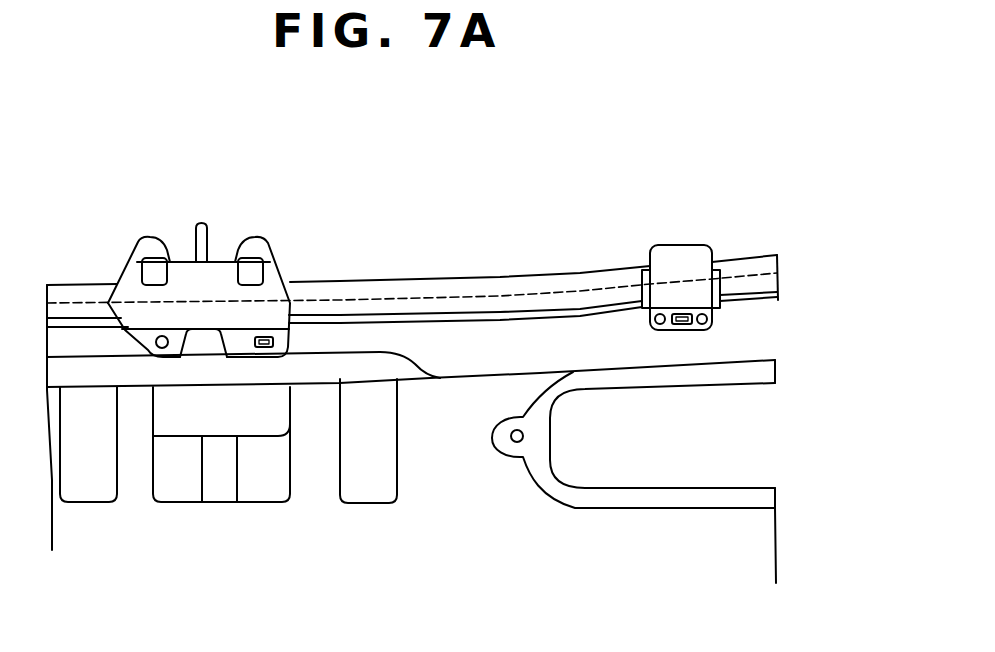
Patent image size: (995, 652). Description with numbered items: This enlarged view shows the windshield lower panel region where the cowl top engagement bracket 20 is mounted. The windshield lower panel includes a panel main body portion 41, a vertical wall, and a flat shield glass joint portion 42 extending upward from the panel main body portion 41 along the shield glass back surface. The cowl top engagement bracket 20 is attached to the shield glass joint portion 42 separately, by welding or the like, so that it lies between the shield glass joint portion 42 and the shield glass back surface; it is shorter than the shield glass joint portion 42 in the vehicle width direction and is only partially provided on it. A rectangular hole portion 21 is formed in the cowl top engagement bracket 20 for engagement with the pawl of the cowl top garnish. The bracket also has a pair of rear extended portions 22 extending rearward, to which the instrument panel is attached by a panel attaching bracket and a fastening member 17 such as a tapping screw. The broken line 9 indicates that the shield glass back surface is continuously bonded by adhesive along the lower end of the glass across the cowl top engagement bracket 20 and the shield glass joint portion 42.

The broken line 9 is at (509, 293).
The fastening member 17 is at (203, 222).
The cowl top engagement bracket 20 is at (202, 307).
The hole portion 21 is at (264, 348).
The rear extended portions 22 is at (150, 243).
The panel main body portion 41 is at (450, 485).
The shield glass joint portion 42 is at (432, 290).